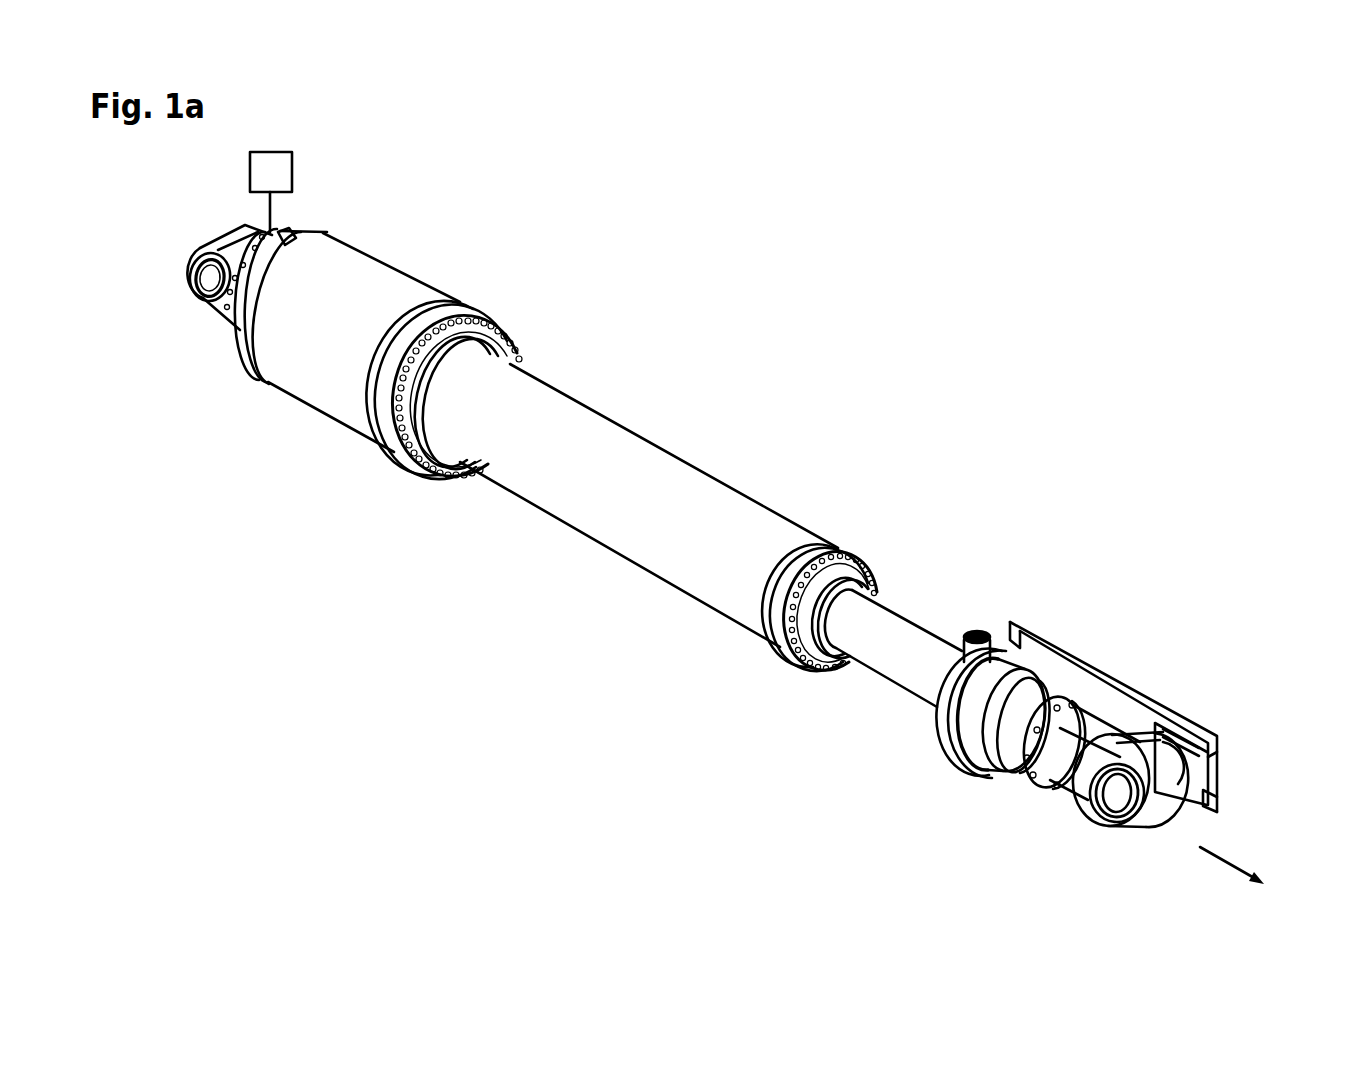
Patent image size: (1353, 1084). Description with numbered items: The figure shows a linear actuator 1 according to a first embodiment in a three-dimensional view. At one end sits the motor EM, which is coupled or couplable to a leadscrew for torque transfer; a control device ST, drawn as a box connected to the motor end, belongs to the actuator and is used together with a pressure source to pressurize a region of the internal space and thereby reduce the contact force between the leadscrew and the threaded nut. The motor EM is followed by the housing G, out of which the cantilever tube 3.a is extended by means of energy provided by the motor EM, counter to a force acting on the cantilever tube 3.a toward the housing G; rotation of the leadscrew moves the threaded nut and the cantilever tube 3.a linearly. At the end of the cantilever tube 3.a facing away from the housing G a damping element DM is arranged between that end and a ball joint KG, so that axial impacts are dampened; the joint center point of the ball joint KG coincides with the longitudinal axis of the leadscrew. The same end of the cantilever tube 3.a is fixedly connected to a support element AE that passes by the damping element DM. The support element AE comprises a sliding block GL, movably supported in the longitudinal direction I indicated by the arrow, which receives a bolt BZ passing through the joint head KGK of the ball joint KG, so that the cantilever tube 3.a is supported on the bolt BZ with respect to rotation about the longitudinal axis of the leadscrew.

The linear actuator 1 is at (930, 290).
The control device ST is at (277, 175).
The motor EM is at (420, 256).
The housing G is at (591, 448).
The cantilever tube 3.a is at (888, 653).
The damping element DM is at (977, 738).
The support element AE is at (1138, 722).
The sliding block GL is at (1200, 772).
The bolt BZ is at (1110, 803).
The joint head KGK is at (1130, 837).
The ball joint KG is at (1170, 810).
The longitudinal direction I is at (1238, 860).